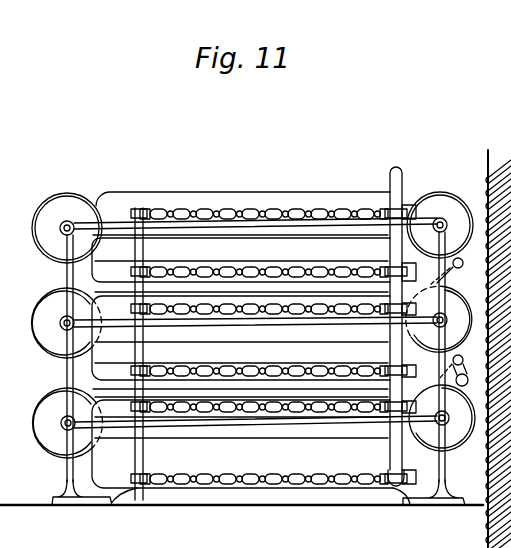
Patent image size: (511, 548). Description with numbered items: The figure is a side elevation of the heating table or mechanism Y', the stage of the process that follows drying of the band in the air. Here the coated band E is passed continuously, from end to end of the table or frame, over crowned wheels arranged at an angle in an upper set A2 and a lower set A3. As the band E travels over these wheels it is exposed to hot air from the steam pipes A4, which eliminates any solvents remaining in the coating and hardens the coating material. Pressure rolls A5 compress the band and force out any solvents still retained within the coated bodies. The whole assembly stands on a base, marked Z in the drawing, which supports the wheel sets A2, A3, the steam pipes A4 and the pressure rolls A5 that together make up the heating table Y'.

The base Z is at (7, 517).
The heating table Y' is at (228, 181).
The upper set of crowned wheels A2 is at (62, 255).
The lower set of crowned wheels A3 is at (43, 395).
The steam pipes A4 is at (198, 210).
The coated band E is at (248, 190).
The pressure rolls A5 is at (450, 271).